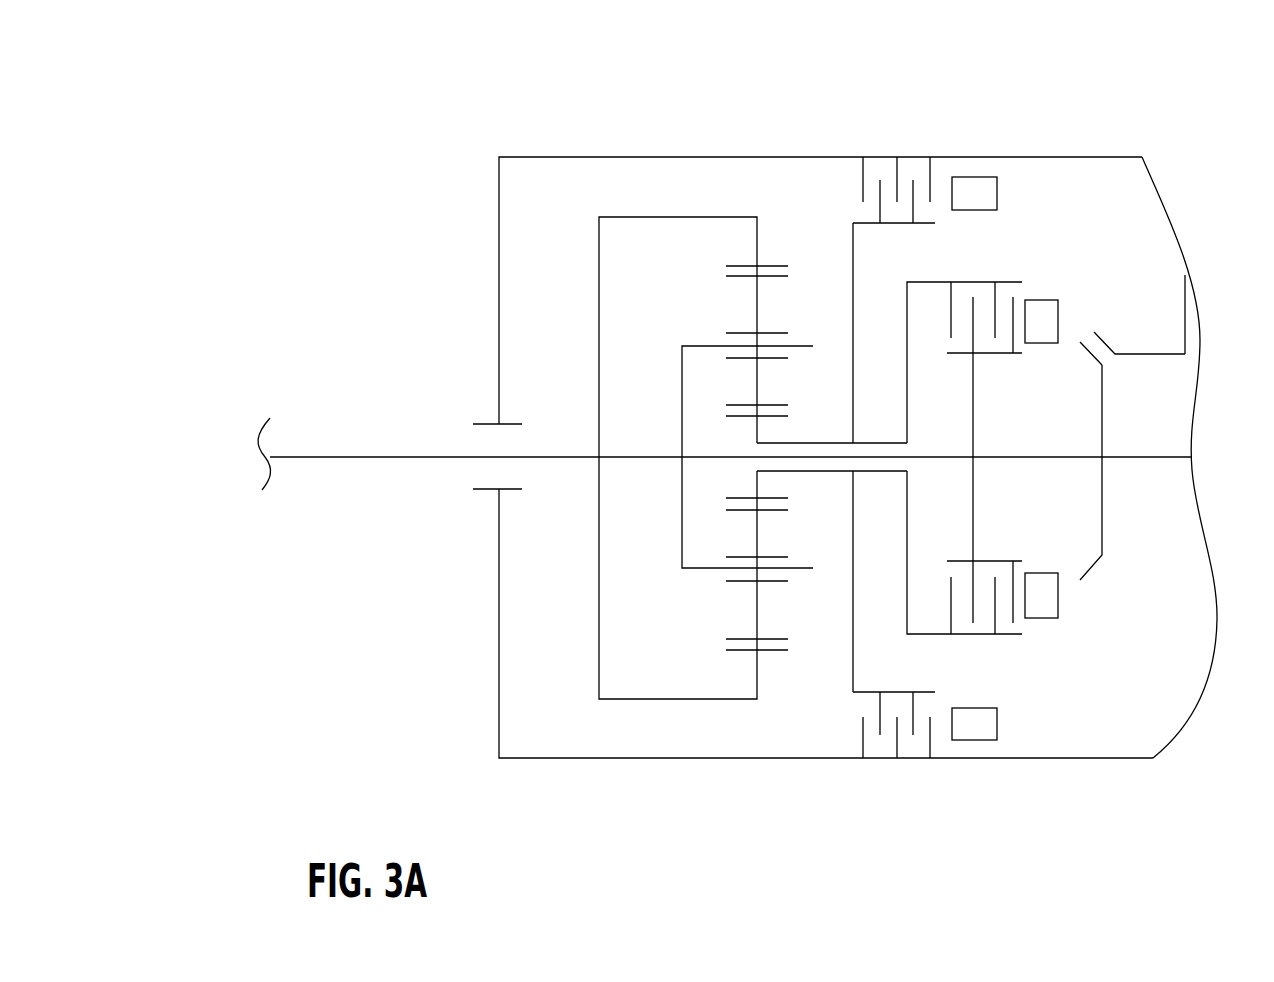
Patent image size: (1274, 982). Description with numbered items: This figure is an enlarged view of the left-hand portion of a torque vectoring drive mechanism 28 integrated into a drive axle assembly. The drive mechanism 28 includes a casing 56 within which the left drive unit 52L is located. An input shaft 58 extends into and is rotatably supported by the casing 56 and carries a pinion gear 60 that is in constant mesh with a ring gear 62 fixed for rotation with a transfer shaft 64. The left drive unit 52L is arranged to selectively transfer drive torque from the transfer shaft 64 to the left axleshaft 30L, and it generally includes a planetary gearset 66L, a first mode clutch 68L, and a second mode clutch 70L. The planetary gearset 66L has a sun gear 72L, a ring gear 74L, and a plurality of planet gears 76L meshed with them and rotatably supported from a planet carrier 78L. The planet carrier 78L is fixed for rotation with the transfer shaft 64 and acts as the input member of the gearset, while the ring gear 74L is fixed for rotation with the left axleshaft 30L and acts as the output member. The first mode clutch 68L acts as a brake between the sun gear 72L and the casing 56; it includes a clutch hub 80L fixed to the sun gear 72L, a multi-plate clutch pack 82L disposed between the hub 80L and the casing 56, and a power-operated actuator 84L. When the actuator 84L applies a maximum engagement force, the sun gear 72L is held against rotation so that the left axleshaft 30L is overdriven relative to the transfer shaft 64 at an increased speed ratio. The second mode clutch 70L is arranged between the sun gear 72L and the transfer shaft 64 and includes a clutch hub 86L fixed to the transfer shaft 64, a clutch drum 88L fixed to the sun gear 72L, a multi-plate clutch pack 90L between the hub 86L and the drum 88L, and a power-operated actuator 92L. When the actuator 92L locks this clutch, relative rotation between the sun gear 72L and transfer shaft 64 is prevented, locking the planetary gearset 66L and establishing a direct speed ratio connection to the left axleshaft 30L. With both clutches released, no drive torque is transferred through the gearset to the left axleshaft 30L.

The drive mechanism 28 is at (677, 103).
The casing 56 is at (537, 157).
The input shaft 58 is at (1185, 300).
The left axleshaft 30L is at (330, 457).
The transfer shaft 64 is at (1017, 457).
The left drive unit 52L is at (700, 712).
The planet carrier 78L is at (702, 336).
The planet gears 76L is at (757, 303).
The ring gear 74L is at (757, 673).
The sun gear 72L is at (806, 443).
The clutch hub 80L is at (853, 248).
The first mode clutch 68L is at (913, 137).
The multi-plate clutch pack 82L is at (919, 193).
The power-operated actuator 84L is at (978, 740).
The planetary gearset 66L is at (774, 192).
The clutch drum 88L is at (907, 634).
The second mode clutch 70L is at (1003, 273).
The power-operated actuator 92L is at (1048, 298).
The clutch hub 86L is at (973, 500).
The multi-plate clutch pack 90L is at (1002, 601).
The pinion gear 60 is at (1106, 337).
The ring gear 62 is at (1102, 393).